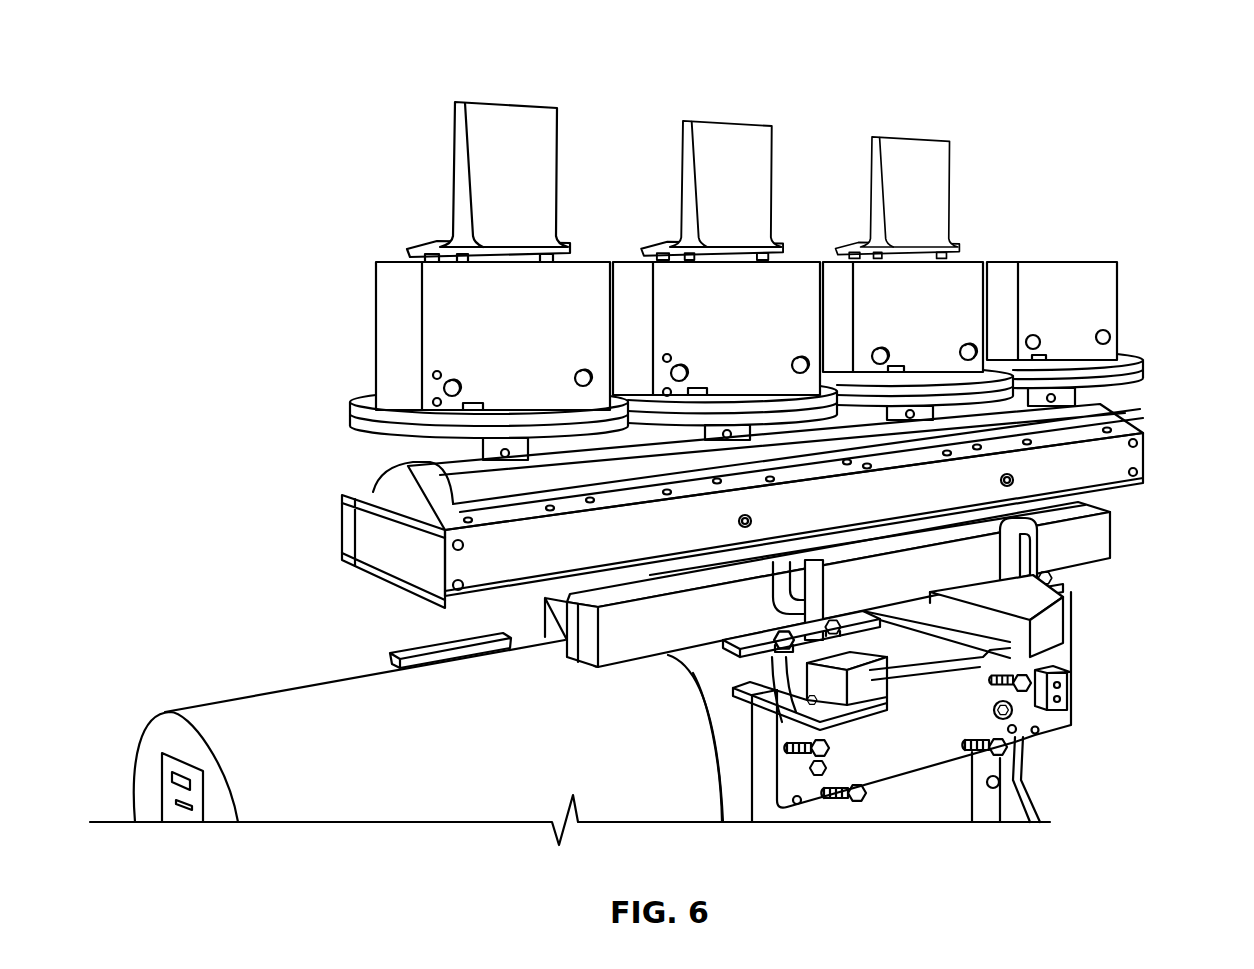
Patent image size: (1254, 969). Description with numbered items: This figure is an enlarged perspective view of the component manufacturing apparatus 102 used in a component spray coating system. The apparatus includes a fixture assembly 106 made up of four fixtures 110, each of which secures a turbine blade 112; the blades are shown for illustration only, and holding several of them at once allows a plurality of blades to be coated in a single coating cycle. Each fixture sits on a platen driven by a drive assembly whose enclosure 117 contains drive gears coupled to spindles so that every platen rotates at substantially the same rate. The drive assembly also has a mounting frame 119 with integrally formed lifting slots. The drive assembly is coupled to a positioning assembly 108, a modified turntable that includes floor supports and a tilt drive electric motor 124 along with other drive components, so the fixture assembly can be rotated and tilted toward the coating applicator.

The component manufacturing apparatus 102 is at (368, 73).
The fixture assembly 106 is at (1124, 402).
The positioning assembly 108 is at (1097, 625).
The fixture 110 is at (543, 341).
The turbine blade 112 is at (540, 180).
The enclosure 117 is at (855, 521).
The mounting frame 119 is at (978, 579).
The tilt drive electric motor 124 is at (495, 744).